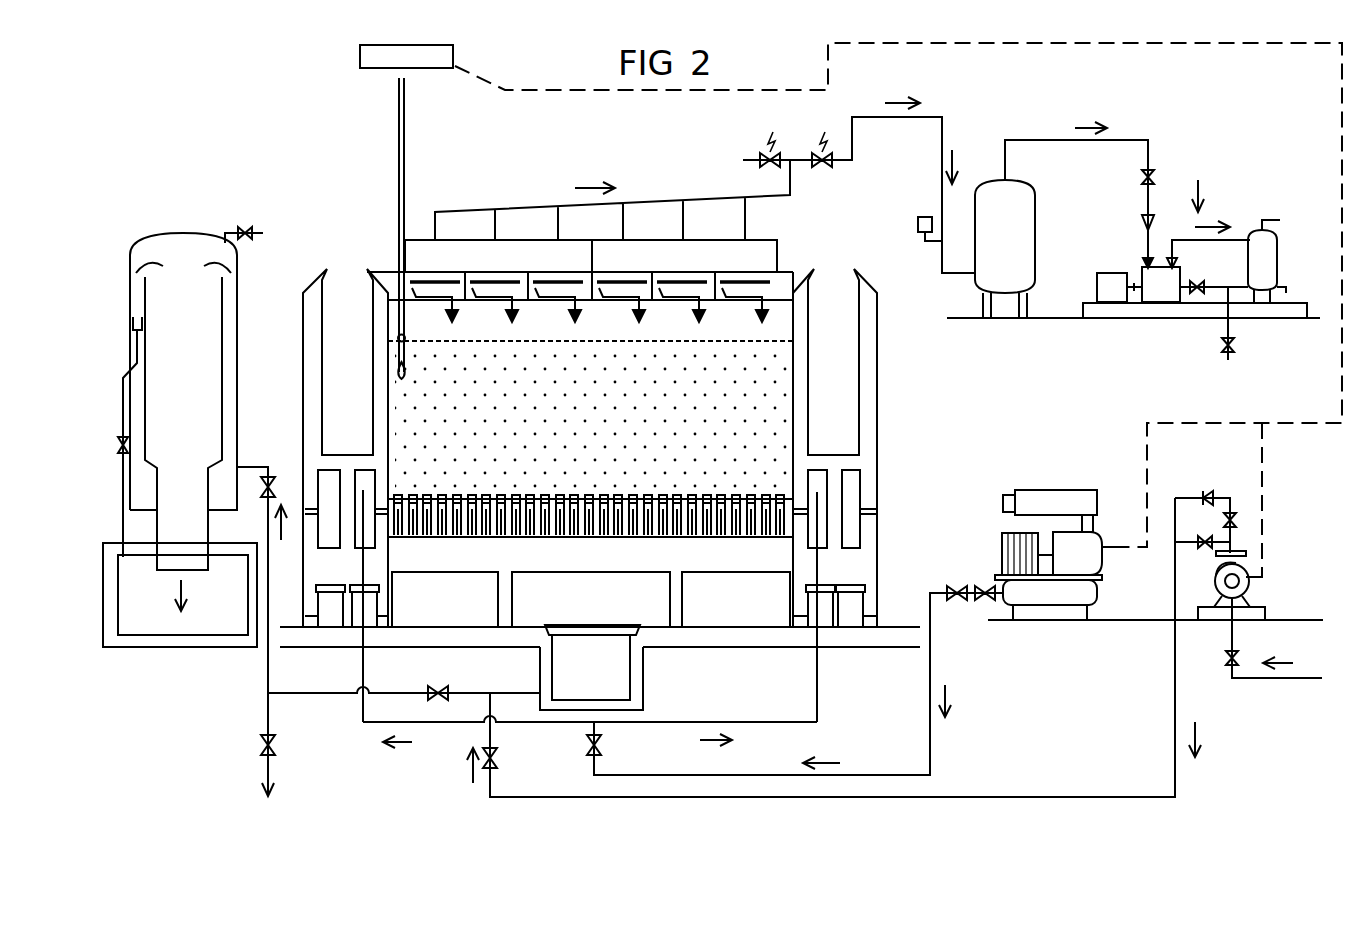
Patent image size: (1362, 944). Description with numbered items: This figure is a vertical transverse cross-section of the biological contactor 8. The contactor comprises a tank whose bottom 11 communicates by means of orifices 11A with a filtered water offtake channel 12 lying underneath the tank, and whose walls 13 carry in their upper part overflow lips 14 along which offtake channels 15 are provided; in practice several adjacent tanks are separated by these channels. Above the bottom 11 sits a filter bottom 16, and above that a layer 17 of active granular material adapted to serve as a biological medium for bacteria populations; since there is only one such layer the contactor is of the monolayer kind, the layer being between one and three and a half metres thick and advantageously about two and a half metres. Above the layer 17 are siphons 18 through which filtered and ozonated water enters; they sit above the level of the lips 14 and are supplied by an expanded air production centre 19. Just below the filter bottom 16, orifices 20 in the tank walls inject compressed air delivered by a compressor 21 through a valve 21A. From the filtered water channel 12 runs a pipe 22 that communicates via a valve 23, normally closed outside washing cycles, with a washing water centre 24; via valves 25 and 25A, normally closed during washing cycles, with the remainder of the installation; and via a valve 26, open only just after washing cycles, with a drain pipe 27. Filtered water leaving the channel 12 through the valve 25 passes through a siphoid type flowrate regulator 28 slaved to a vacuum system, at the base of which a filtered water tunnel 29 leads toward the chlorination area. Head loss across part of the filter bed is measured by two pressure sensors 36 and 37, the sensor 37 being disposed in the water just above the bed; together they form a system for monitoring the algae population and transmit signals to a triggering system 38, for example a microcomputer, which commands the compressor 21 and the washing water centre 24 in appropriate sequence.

The biological contactor 8 is at (355, 168).
The bottom 11 is at (437, 615).
The orifices 11A is at (600, 625).
The filtered water offtake channel 12 is at (606, 680).
The walls 13 is at (793, 318).
The overflow lips 14 is at (800, 290).
The offtake channels 15 is at (366, 437).
The filter bottom 16 is at (760, 488).
The layer of active granular material 17 is at (612, 413).
The siphons 18 is at (428, 245).
The expanded air production centre 19 is at (1165, 150).
The orifices 20 is at (808, 497).
The compressor 21 is at (1034, 482).
The valve 21A is at (604, 745).
The pipe 22 is at (502, 691).
The valve 23 is at (500, 758).
The washing water centre 24 is at (1275, 545).
The valve 25 is at (440, 695).
The valve 25A is at (268, 470).
The valve 26 is at (276, 746).
The drain pipe 27 is at (272, 776).
The siphoid type flowrate regulator 28 is at (201, 400).
The filtered water tunnel 29 is at (171, 623).
The pressure sensor 36 is at (405, 168).
The pressure sensor 37 is at (398, 262).
The triggering system 38 is at (360, 47).